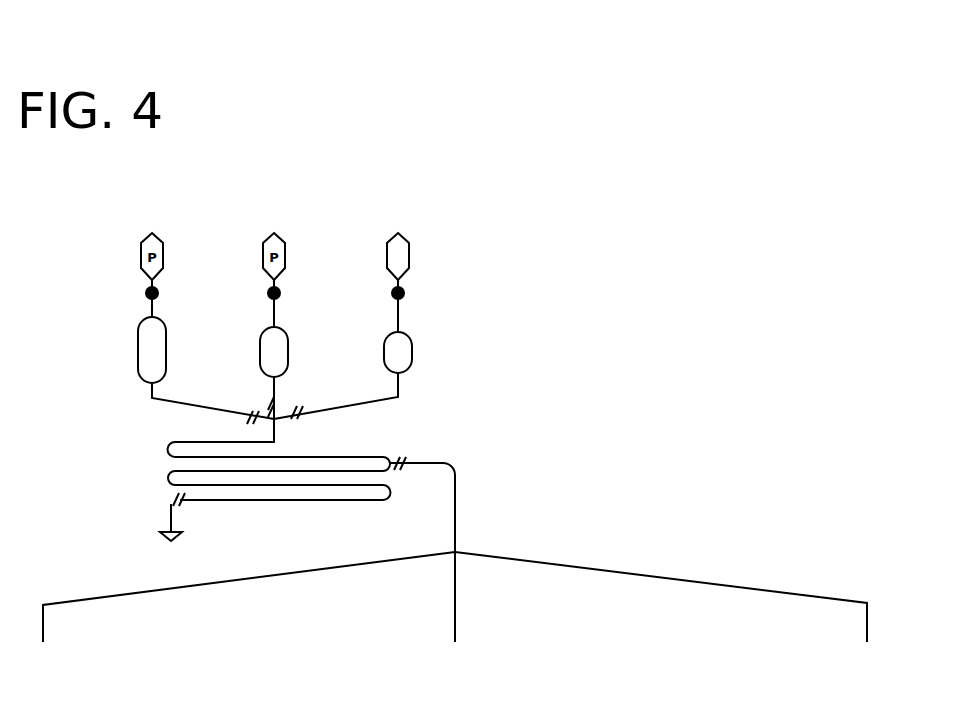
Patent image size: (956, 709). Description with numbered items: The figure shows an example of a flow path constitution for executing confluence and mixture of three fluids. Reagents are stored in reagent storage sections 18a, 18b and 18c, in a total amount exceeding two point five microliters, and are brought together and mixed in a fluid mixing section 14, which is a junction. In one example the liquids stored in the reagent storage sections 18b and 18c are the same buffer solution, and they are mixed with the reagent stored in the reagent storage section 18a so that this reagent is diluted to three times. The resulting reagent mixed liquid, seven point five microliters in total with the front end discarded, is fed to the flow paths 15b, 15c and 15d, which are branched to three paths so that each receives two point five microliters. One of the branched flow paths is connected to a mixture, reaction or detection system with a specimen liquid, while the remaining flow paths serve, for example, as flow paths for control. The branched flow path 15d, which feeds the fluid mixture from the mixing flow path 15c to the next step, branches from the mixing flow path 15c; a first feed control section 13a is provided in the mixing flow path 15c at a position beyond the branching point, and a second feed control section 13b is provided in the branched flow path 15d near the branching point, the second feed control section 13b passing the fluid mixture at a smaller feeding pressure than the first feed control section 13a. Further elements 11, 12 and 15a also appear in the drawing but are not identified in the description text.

The pressure source 11 is at (408, 255).
The pressure regulating valve 12 is at (404, 293).
The reagent storage section 18a is at (138, 345).
The reagent storage section 18b is at (259, 352).
The reagent storage section 18c is at (412, 352).
The fluid mixing section 14 is at (256, 420).
The serpentine flow channel 15a is at (167, 450).
The first feed control section 13a is at (172, 497).
The second feed control section 13b is at (401, 456).
The flow path 15b is at (222, 582).
The mixing flow path 15c is at (457, 608).
The branched flow path 15d is at (655, 577).